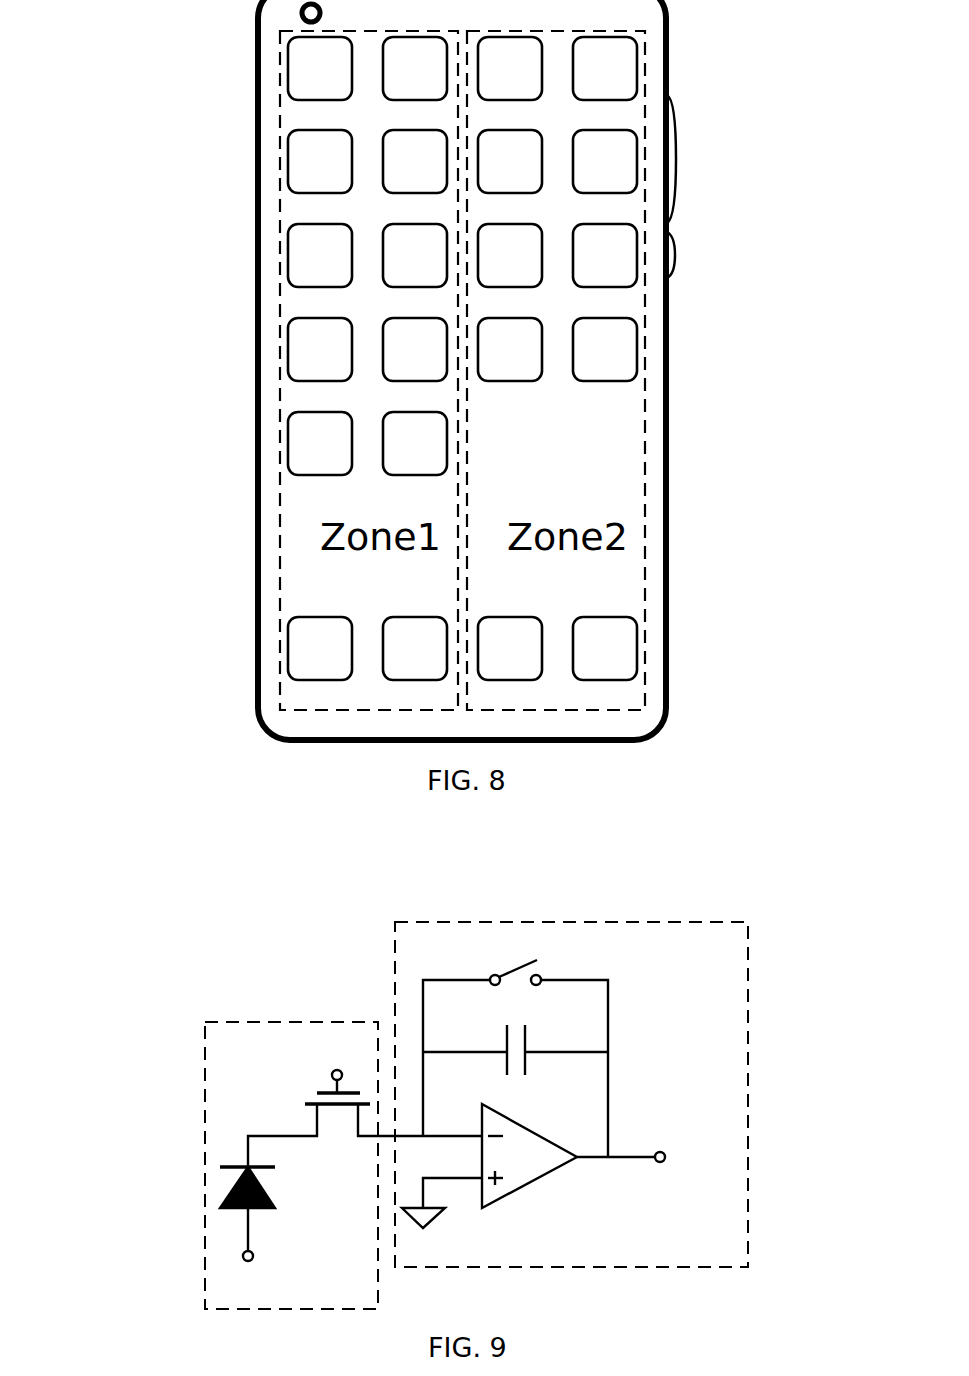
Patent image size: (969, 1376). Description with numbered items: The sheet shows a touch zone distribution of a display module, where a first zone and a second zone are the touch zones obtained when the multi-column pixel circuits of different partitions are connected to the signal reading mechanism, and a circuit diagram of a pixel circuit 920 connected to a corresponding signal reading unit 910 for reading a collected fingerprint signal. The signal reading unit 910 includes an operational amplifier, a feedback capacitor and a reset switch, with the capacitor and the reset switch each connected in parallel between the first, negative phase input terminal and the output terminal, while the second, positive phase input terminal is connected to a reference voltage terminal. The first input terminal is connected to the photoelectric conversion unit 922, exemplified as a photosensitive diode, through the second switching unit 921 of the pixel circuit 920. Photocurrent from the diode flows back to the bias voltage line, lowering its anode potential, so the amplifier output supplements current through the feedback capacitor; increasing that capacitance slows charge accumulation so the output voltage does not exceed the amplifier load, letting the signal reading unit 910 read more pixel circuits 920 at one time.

The signal reading unit 910 is at (727, 1000).
The pixel circuit 920 is at (273, 1037).
The second switching unit 921 is at (317, 1104).
The photoelectric conversion unit 922 is at (233, 1173).